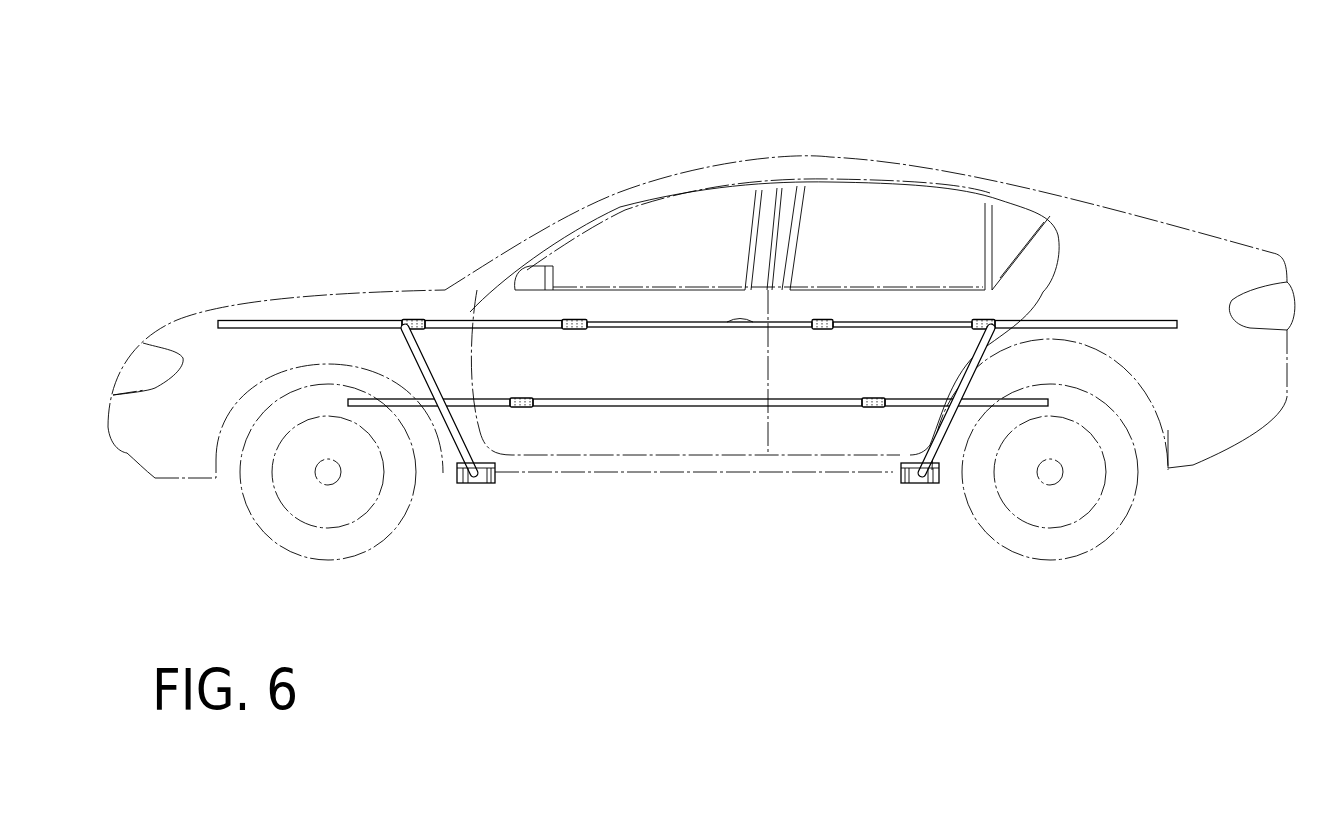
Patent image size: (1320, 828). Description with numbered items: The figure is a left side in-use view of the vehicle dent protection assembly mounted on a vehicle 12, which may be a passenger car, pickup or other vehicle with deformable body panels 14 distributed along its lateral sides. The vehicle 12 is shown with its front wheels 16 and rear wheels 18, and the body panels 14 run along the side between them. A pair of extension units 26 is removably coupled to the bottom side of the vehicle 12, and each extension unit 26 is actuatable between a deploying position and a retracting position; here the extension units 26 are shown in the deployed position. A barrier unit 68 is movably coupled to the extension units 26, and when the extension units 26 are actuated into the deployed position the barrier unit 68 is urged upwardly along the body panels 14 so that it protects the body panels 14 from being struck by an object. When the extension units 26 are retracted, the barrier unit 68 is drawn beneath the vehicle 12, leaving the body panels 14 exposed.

The vehicle 12 is at (573, 207).
The body panels 14 is at (697, 318).
The front wheels 16 is at (402, 527).
The rear wheels 18 is at (1072, 558).
The extension units 26 is at (514, 426).
The barrier units 68 is at (708, 292).